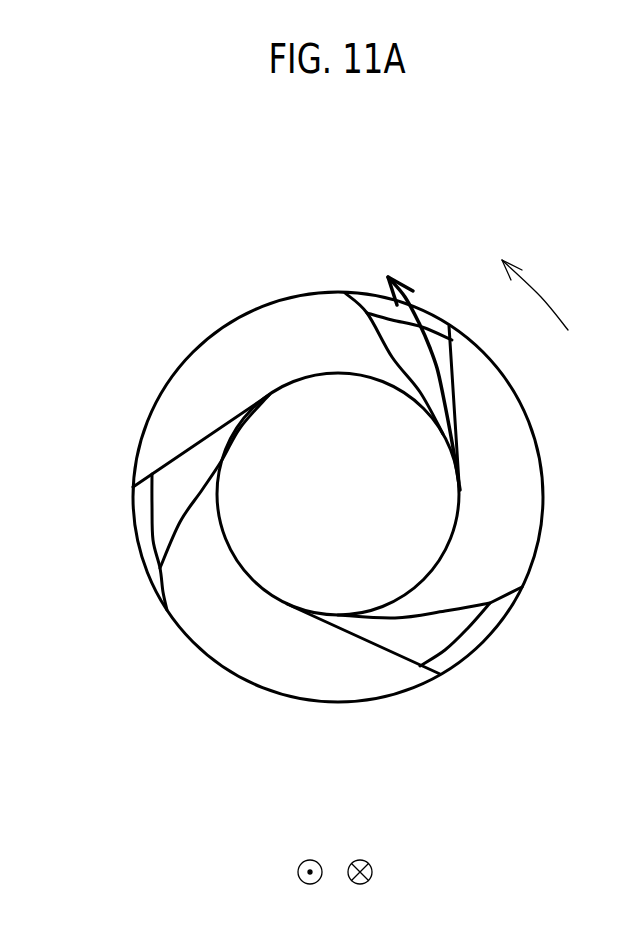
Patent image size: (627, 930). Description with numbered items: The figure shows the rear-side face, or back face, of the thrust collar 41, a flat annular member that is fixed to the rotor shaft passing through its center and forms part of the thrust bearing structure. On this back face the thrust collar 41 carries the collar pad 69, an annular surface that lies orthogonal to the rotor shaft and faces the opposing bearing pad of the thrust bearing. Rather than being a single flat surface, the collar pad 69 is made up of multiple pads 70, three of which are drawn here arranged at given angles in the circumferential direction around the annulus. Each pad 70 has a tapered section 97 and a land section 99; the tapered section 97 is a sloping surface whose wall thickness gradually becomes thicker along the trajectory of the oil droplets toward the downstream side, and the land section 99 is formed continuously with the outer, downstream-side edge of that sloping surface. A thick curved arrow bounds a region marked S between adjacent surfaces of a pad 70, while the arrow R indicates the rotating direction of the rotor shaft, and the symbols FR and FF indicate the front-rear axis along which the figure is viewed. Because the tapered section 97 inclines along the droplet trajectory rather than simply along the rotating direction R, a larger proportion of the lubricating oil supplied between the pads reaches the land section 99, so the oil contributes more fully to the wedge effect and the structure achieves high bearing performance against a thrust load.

The thrust collar 41 is at (132, 400).
The pad 70 is at (288, 512).
The collar pad 69 is at (308, 512).
The land section 99 is at (372, 303).
The tapered section 97 is at (403, 337).
The gap S is at (425, 350).
The rotating direction R is at (545, 295).
The rear direction FR is at (311, 859).
The front direction FF is at (361, 859).